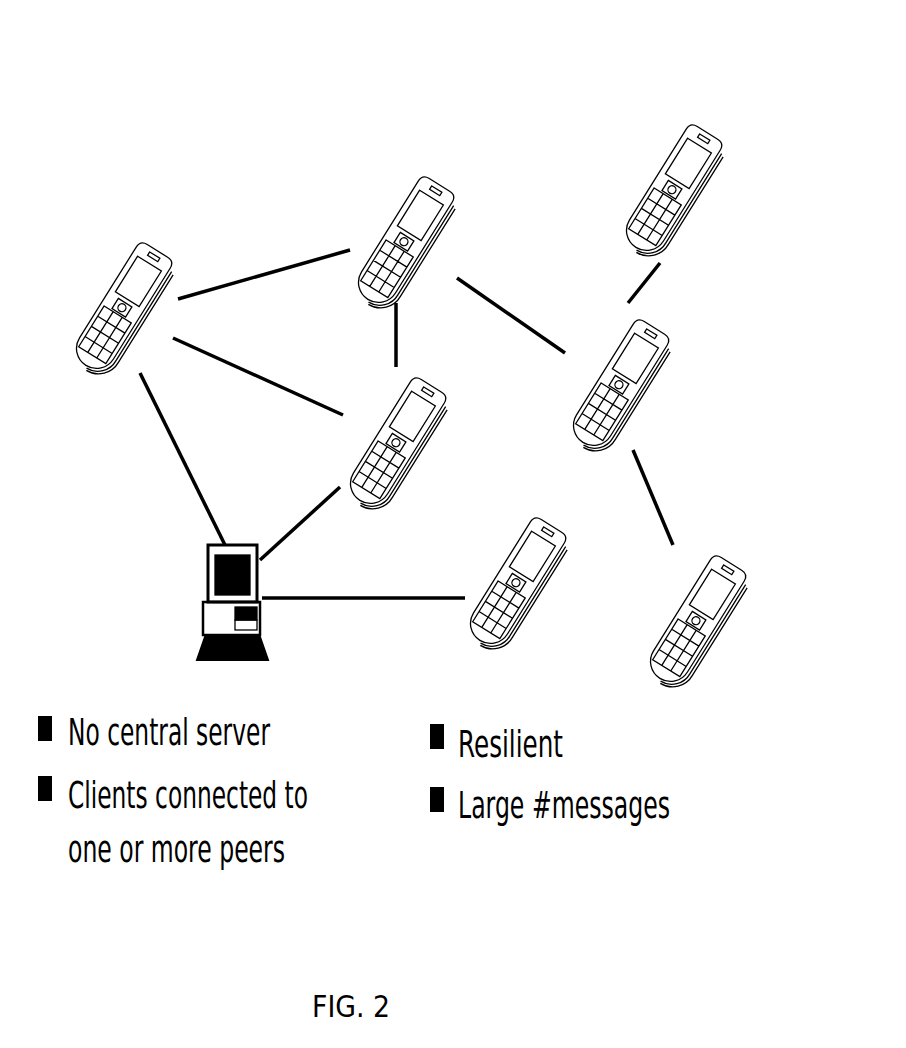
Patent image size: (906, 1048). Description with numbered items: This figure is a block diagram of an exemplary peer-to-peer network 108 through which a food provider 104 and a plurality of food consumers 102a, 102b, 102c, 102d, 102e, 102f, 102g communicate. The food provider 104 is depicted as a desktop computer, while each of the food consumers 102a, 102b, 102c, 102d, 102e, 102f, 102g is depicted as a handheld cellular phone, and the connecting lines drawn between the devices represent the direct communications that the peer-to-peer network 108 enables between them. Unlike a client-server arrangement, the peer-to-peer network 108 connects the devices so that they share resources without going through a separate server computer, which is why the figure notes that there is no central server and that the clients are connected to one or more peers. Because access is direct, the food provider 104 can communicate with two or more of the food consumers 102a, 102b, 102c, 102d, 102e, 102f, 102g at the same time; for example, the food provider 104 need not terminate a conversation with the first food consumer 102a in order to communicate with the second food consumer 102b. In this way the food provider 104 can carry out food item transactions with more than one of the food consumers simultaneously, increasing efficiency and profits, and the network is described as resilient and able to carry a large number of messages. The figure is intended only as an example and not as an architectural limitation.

The peer-to-peer network 108 is at (178, 133).
The food consumer 102a is at (122, 299).
The food consumer 102b is at (405, 232).
The food consumer 102c is at (673, 176).
The food consumer 102d is at (429, 446).
The food consumer 102e is at (660, 387).
The food consumer 102f is at (517, 574).
The food consumer 102g is at (718, 613).
The food provider 104 is at (202, 602).